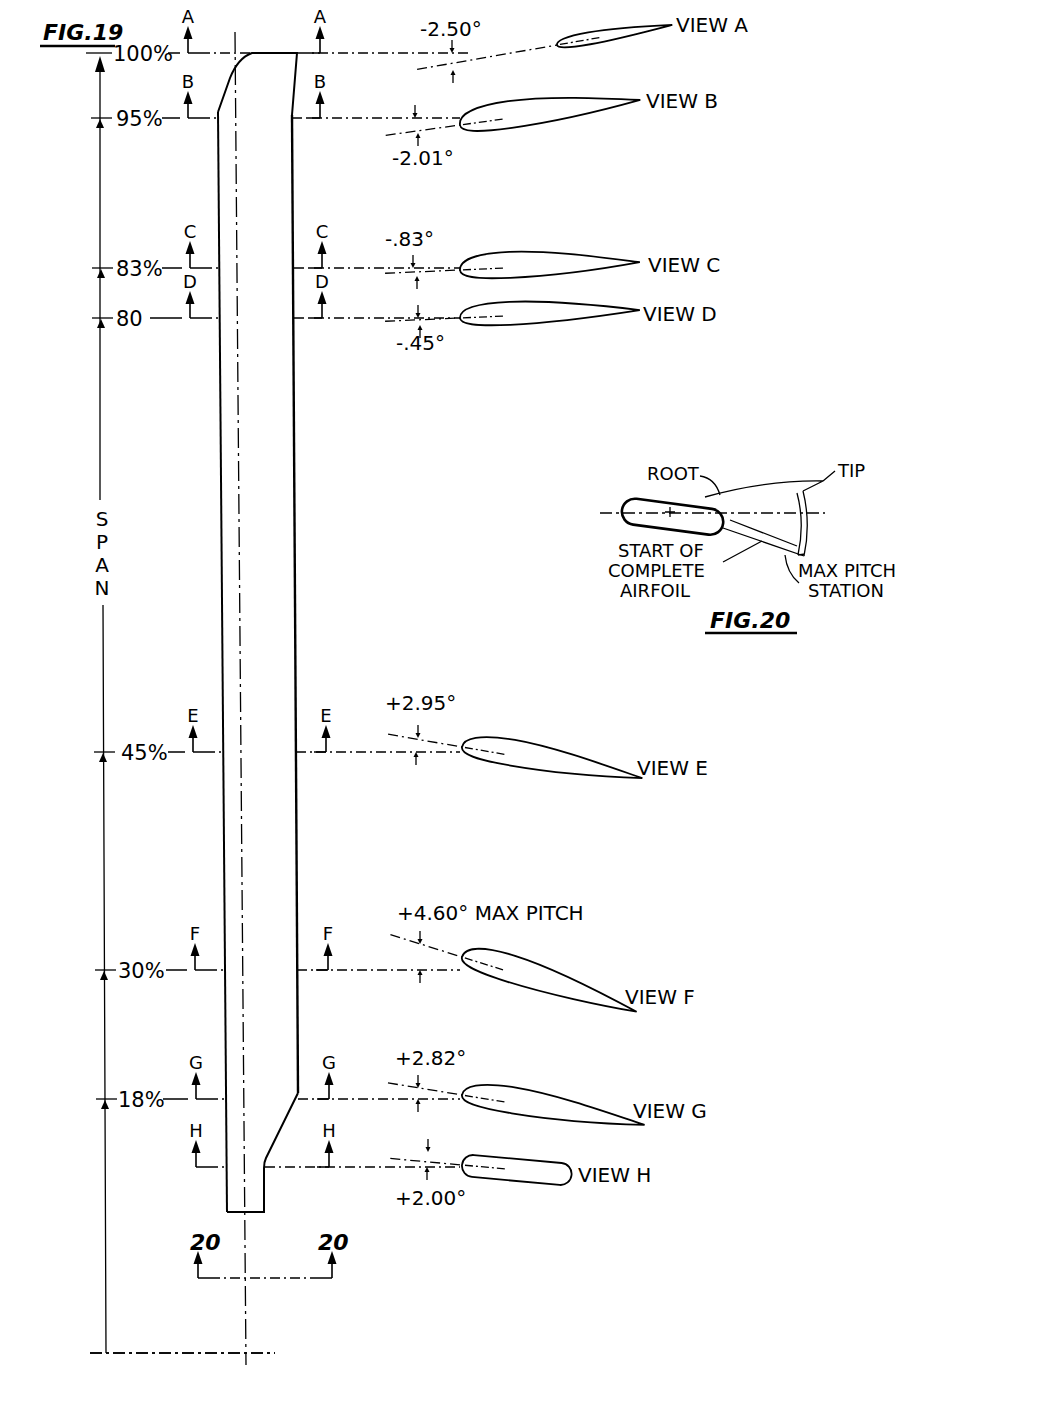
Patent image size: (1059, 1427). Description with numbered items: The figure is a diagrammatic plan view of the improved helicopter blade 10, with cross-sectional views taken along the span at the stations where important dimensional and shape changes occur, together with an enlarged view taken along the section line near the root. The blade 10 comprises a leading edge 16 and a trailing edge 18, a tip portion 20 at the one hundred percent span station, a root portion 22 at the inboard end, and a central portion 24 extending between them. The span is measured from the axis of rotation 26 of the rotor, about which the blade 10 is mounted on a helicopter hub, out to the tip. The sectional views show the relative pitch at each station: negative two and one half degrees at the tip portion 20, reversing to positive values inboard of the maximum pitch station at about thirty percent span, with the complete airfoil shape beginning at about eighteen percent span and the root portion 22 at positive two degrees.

The helicopter blade 10 is at (340, 472).
The leading edge 16 is at (214, 474).
The trailing edge 18 is at (298, 536).
The tip portion 20 is at (246, 82).
The root portion 22 is at (262, 1157).
The central portion 24 is at (291, 621).
The axis of rotation 26 is at (248, 1352).